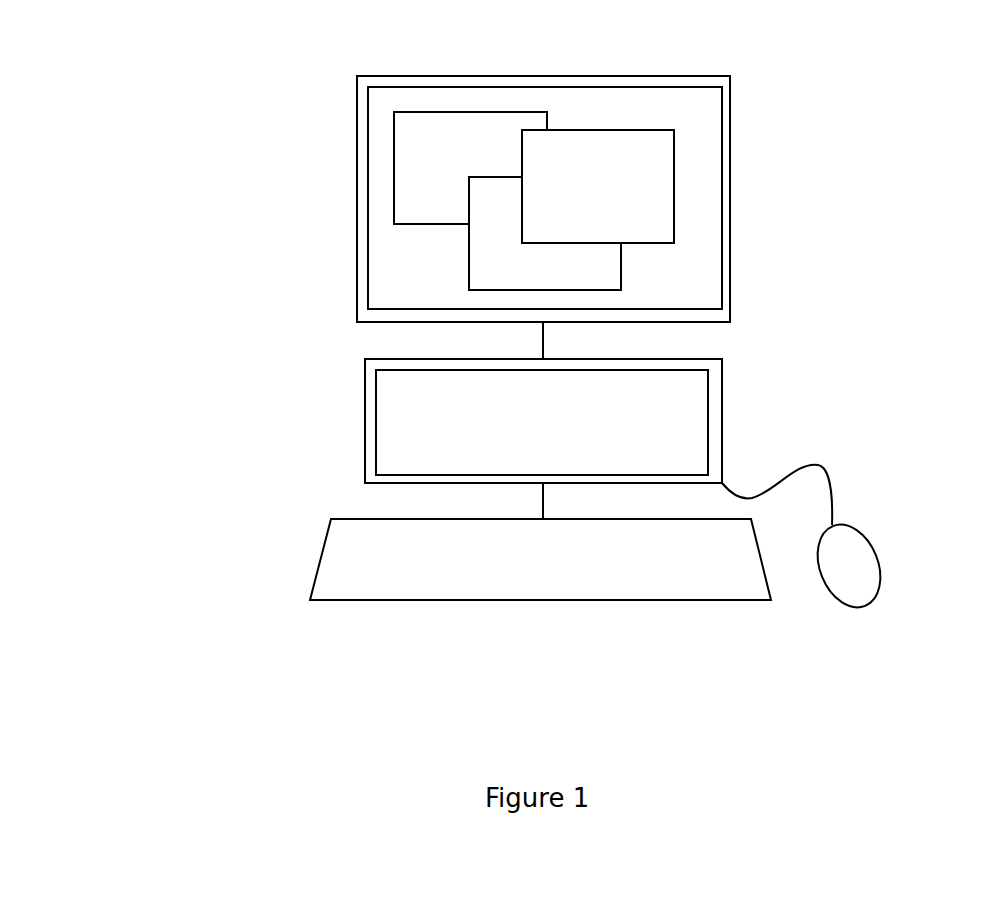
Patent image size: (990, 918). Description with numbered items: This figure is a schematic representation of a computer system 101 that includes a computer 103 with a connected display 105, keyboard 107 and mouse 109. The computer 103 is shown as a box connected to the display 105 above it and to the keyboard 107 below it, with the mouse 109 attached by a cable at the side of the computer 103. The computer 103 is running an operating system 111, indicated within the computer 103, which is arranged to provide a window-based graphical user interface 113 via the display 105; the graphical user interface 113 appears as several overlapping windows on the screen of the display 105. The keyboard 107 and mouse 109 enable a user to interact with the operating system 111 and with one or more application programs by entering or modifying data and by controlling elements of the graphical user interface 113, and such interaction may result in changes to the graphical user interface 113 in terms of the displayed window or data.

The computer system 101 is at (250, 92).
The computer 103 is at (365, 379).
The display 105 is at (357, 200).
The keyboard 107 is at (317, 552).
The mouse 109 is at (875, 553).
The operating system 111 is at (376, 447).
The graphical user interface 113 is at (622, 230).